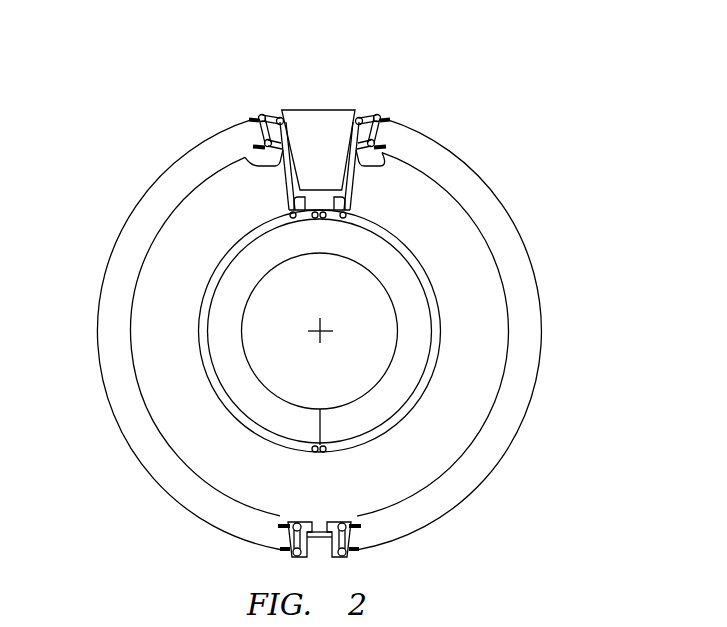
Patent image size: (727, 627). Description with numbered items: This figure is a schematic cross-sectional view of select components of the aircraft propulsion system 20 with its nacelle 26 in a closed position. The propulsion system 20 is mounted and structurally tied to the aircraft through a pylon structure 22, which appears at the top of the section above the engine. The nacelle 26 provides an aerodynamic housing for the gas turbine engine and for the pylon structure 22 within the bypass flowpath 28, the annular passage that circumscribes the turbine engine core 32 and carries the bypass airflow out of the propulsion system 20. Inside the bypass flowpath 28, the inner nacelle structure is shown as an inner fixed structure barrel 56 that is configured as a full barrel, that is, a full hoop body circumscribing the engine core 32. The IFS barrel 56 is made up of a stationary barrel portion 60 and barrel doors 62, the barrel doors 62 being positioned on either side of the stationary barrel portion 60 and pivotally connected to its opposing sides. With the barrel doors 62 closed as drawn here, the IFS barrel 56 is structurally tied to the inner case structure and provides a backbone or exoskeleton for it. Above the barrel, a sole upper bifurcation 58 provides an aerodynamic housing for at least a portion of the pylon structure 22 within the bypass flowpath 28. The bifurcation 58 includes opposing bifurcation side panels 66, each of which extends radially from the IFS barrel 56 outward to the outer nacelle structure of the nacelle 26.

The aircraft propulsion system 20 is at (502, 94).
The pylon structure 22 is at (338, 105).
The nacelle 26 is at (107, 443).
The bypass flowpath 28 is at (489, 348).
The turbine engine core 32 is at (375, 303).
The inner fixed structure barrel 56 is at (412, 238).
The bifurcation 58 is at (365, 184).
The stationary barrel portion 60 is at (291, 206).
The barrel door 62 is at (198, 315).
The bifurcation side panel 66 is at (245, 157).